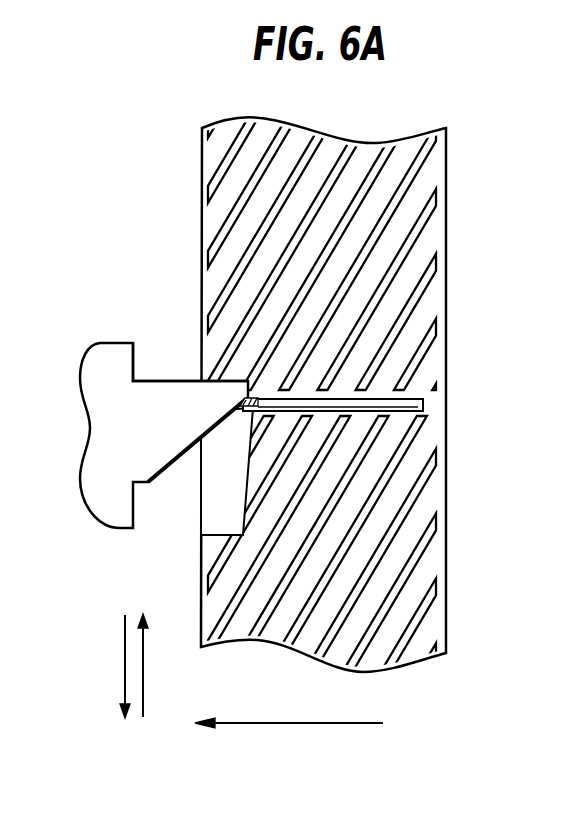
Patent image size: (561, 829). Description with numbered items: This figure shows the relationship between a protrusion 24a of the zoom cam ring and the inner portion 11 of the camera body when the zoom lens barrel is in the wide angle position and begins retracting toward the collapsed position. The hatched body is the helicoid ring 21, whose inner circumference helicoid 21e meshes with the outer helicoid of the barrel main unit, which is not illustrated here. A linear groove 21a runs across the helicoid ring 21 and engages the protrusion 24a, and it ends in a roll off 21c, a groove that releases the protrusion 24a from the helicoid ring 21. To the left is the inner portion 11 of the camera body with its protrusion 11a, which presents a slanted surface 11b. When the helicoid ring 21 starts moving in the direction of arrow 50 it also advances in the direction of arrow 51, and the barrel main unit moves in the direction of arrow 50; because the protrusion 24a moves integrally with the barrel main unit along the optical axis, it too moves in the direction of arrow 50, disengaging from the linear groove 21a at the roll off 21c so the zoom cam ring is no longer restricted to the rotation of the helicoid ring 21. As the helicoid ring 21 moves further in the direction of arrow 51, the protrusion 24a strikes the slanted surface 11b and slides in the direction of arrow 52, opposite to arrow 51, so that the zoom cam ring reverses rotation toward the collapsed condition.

The inner portion of camera body 11 is at (103, 405).
The protrusion 11a is at (172, 397).
The slanted surface 11b is at (170, 468).
The helicoid ring 21 is at (420, 445).
The linear groove 21a is at (423, 404).
The roll off 21c is at (212, 522).
The inner circumference helicoid 21e is at (370, 507).
The protrusion of zoom cam ring 24a is at (247, 410).
The arrow 50 is at (350, 723).
The arrow 51 is at (143, 697).
The arrow 52 is at (122, 682).